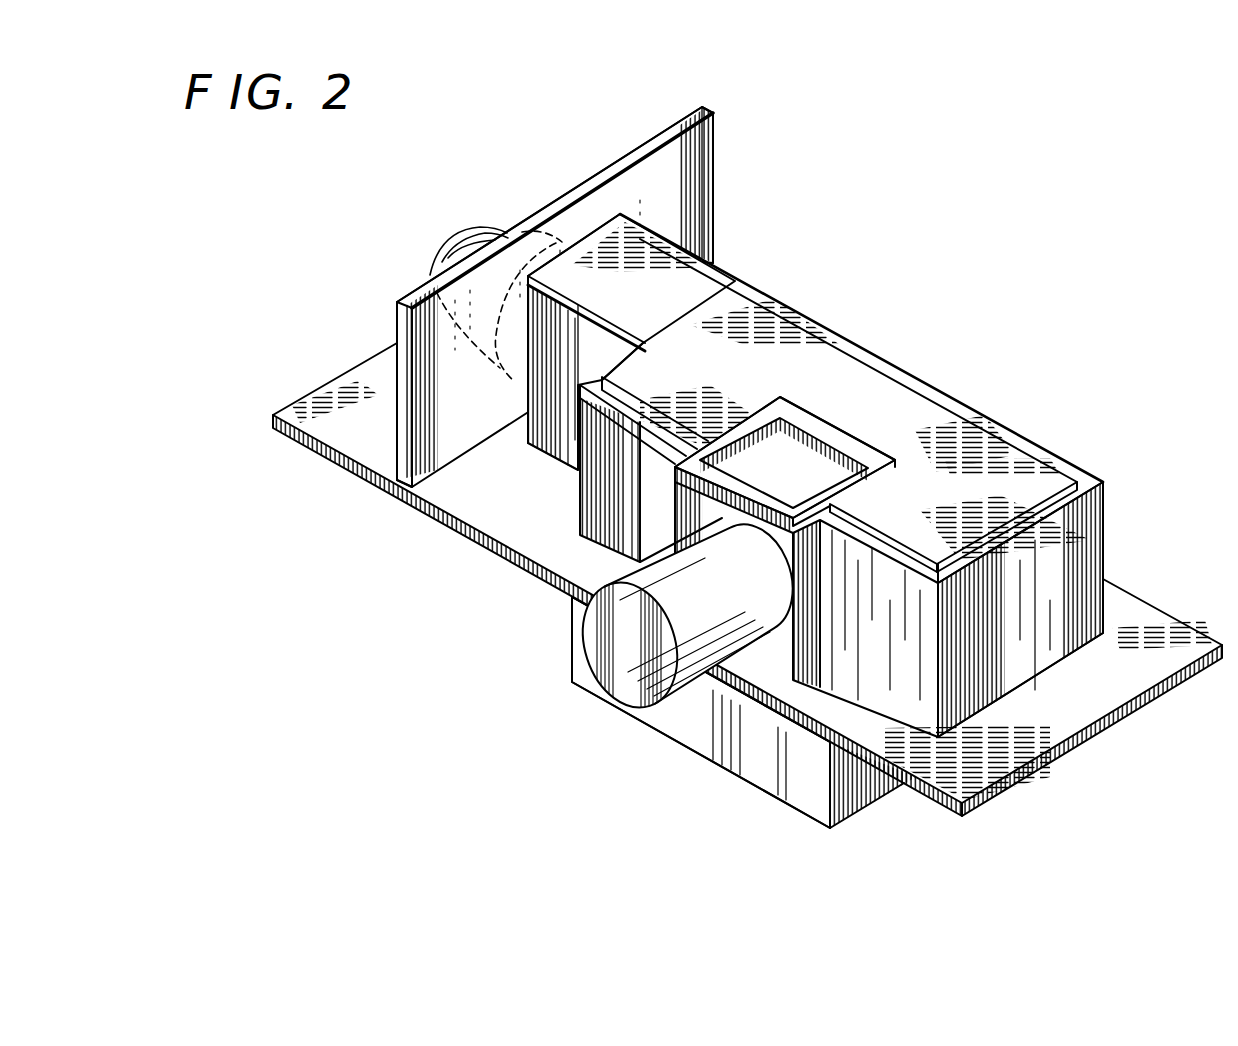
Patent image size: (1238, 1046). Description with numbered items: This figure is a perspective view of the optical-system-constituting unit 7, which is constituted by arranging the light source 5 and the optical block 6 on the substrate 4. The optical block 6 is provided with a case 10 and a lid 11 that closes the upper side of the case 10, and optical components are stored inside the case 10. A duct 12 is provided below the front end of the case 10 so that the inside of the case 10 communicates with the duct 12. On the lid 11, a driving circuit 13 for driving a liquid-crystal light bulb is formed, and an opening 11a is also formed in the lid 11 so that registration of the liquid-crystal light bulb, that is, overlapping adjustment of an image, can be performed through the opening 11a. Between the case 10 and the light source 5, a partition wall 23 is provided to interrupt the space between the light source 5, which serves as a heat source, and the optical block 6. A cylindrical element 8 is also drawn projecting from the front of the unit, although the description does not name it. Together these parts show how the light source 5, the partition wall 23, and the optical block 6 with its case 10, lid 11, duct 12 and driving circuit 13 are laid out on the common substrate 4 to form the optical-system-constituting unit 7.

The substrate 4 is at (1115, 690).
The light source 5 is at (462, 228).
The optical block 6 is at (1100, 478).
The optical-system-constituting unit 7 is at (850, 301).
The cylindrical lens 8 is at (620, 672).
The case 10 is at (1095, 553).
The lid 11 is at (683, 265).
The opening 11a is at (808, 448).
The duct 12 is at (735, 750).
The driving circuit 13 is at (995, 458).
The partition wall 23 is at (648, 172).